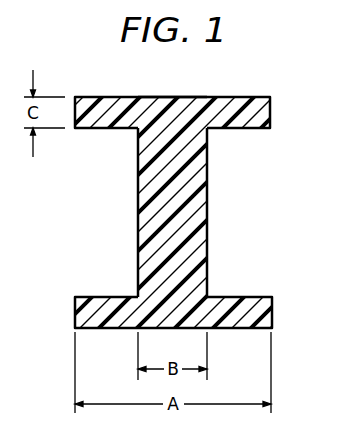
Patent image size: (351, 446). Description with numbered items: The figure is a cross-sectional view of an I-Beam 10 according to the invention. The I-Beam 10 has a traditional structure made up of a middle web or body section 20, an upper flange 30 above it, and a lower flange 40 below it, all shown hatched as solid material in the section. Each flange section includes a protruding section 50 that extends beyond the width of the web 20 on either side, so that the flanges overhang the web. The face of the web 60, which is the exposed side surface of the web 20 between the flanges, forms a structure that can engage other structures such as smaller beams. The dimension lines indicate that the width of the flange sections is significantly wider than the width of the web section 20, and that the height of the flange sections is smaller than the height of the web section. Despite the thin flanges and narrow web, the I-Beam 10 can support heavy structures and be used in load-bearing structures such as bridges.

The I-Beam 10 is at (164, 133).
The web section 20 is at (197, 235).
The upper flange 30 is at (261, 115).
The lower flange 40 is at (262, 311).
The protruding section 50 is at (198, 105).
The face of the web 60 is at (208, 178).